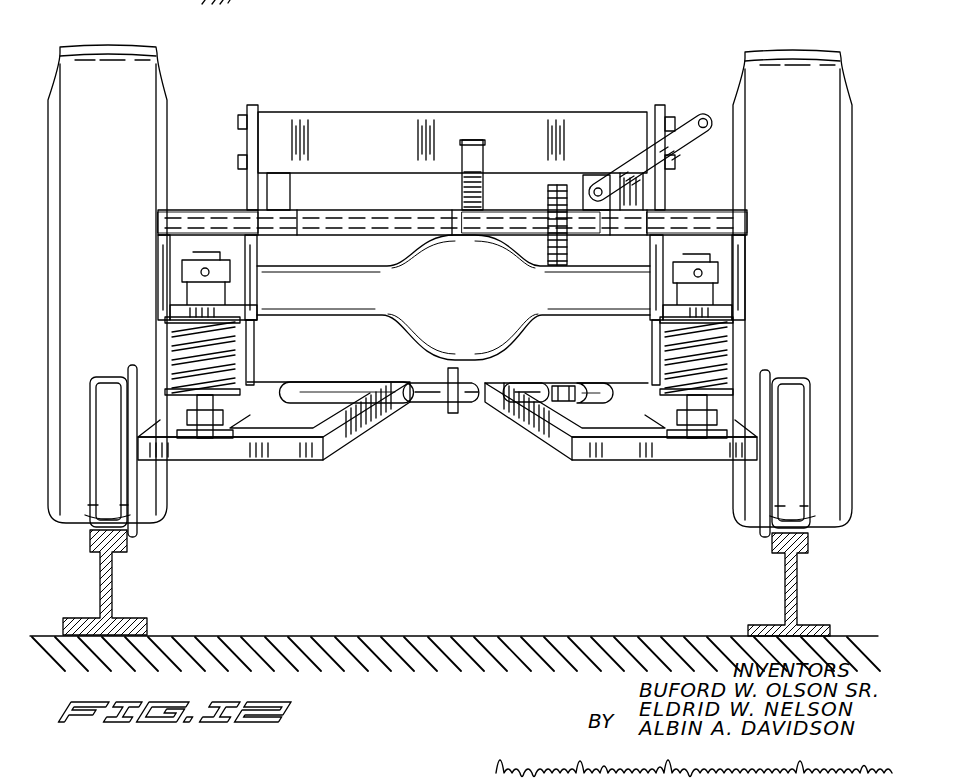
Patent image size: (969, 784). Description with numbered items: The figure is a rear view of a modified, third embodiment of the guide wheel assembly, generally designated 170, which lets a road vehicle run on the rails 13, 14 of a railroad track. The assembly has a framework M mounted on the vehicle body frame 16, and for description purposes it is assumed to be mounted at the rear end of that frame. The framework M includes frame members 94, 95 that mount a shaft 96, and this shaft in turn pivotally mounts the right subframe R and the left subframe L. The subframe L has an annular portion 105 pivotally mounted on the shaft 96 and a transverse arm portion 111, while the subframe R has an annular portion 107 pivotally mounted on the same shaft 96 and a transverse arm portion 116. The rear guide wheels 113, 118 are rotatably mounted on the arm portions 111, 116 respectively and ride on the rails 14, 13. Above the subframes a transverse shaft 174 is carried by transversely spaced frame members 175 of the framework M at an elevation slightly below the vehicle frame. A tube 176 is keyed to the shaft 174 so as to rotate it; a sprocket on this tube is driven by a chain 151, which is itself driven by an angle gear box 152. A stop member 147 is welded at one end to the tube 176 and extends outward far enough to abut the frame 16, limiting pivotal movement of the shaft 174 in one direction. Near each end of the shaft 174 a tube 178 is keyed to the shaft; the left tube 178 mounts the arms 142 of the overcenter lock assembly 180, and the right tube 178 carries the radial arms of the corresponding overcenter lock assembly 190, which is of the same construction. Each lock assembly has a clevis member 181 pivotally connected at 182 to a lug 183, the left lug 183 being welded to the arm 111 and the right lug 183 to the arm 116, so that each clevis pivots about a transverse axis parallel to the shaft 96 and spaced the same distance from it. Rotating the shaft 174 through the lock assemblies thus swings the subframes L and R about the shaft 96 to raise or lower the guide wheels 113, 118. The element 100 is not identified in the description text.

The body frame 16 is at (350, 124).
The stop member 147 is at (473, 138).
The frame members 175 is at (280, 197).
The tube 176 is at (493, 222).
The angle gear box 152 is at (592, 176).
The tube 178 is at (158, 219).
The transverse shaft 174 is at (337, 213).
The chain 151 is at (568, 252).
The overcenter lock assembly 190 is at (753, 297).
The overcenter lock assembly 180 is at (158, 276).
The arms 142 is at (256, 294).
The frame member 95 is at (254, 358).
The frame member 94 is at (652, 343).
The annular portion 105 is at (340, 383).
The shaft 96 is at (567, 385).
The annular portion 107 is at (593, 393).
The clevis member 181 is at (243, 416).
The lug 183 is at (205, 440).
The pivotal connection 182 is at (184, 460).
The shaft 100 is at (452, 417).
The guide wheel assembly 170 is at (332, 458).
The transverse arm portion 111 is at (310, 462).
The transverse arm portion 116 is at (597, 458).
The rear guide wheel 113 is at (100, 512).
The rear guide wheel 118 is at (793, 428).
The rail 14 is at (113, 594).
The rail 13 is at (783, 598).
The framework M is at (243, 187).
The left subframe L is at (288, 462).
The right subframe R is at (578, 458).